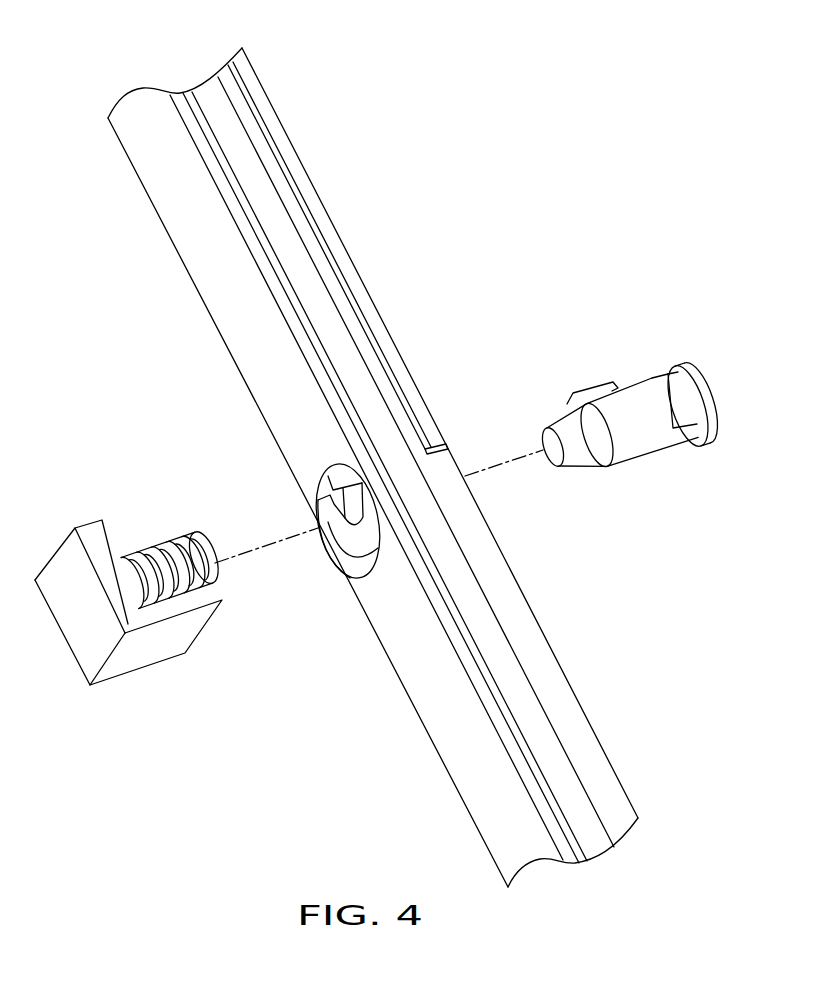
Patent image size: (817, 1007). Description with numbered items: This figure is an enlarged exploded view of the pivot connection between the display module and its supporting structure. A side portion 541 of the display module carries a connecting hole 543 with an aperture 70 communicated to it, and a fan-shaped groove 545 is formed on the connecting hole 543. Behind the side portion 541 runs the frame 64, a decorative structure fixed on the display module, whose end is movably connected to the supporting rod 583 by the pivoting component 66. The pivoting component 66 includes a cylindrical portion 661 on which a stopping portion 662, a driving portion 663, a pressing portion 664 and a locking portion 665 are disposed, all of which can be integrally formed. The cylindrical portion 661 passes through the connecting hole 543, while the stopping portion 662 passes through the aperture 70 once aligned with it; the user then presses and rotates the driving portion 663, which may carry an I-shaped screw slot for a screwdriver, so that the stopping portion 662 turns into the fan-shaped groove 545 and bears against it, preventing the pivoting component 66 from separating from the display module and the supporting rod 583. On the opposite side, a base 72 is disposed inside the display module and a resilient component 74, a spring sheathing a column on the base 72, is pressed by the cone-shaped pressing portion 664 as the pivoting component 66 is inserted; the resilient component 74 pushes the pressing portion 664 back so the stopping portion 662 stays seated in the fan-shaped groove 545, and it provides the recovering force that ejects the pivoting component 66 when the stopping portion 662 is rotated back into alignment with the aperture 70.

The side portion 541 is at (430, 685).
The supporting rod 583 is at (547, 668).
The frame 64 is at (327, 230).
The connecting hole 543 is at (372, 528).
The fan-shaped groove 545 is at (347, 538).
The aperture 70 is at (330, 478).
The base 72 is at (127, 657).
The resilient component 74 is at (150, 560).
The pivoting component 66 is at (667, 408).
The cylindrical portion 661 is at (640, 435).
The stopping portion 662 is at (592, 383).
The driving portion 663 is at (697, 378).
The pressing portion 664 is at (583, 453).
The locking portion 665 is at (678, 408).